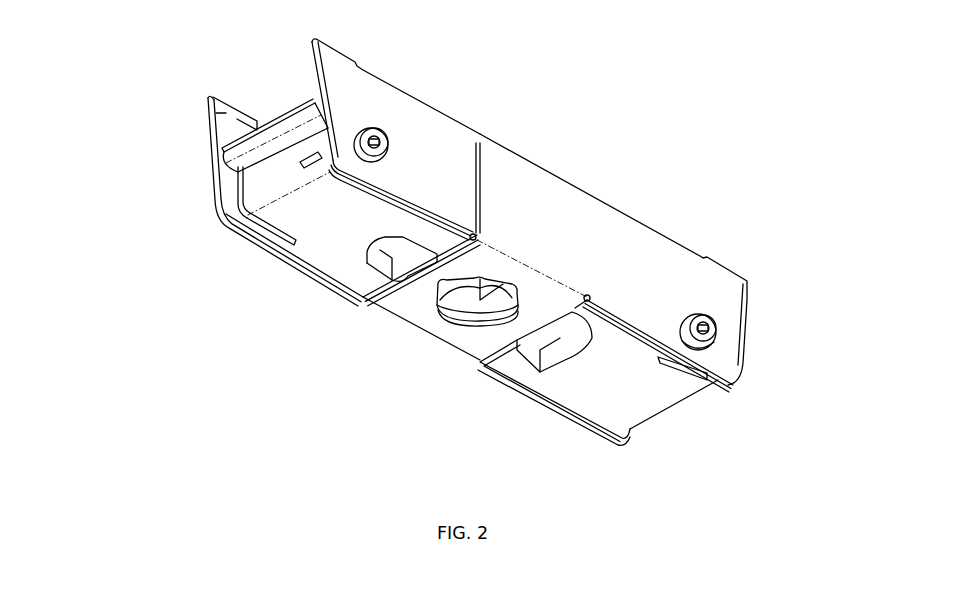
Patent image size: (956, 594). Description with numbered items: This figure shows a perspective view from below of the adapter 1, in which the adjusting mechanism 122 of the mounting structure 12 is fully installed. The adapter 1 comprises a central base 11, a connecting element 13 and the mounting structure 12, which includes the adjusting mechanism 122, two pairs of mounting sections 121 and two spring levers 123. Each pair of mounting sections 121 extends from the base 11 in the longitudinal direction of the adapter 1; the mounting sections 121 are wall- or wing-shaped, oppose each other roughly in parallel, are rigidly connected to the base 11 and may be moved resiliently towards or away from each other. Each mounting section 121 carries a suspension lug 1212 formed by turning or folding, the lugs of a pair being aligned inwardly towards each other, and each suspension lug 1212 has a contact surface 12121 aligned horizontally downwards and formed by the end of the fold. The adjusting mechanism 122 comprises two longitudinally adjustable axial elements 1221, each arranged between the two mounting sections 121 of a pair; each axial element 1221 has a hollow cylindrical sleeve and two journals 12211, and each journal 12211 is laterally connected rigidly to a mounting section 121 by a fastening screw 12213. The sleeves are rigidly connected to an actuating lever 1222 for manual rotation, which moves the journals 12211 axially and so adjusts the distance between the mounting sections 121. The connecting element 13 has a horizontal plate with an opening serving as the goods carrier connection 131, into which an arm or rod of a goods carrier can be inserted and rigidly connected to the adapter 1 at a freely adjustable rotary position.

The adapter 1 is at (243, 272).
The central base 11 is at (535, 152).
The mounting structure 12 is at (432, 95).
The mounting section 121 is at (392, 100).
The suspension lug 1212 is at (208, 110).
The contact surface 12121 is at (218, 112).
The adjusting mechanism 122 is at (228, 183).
The axial element 1221 is at (228, 200).
The actuating lever 1222 is at (358, 236).
The spring lever 123 is at (285, 138).
The connecting element 13 is at (375, 319).
The goods carrier connection 131 is at (463, 293).
The fastening screw 12213 is at (705, 322).
The journal 12211 is at (727, 343).